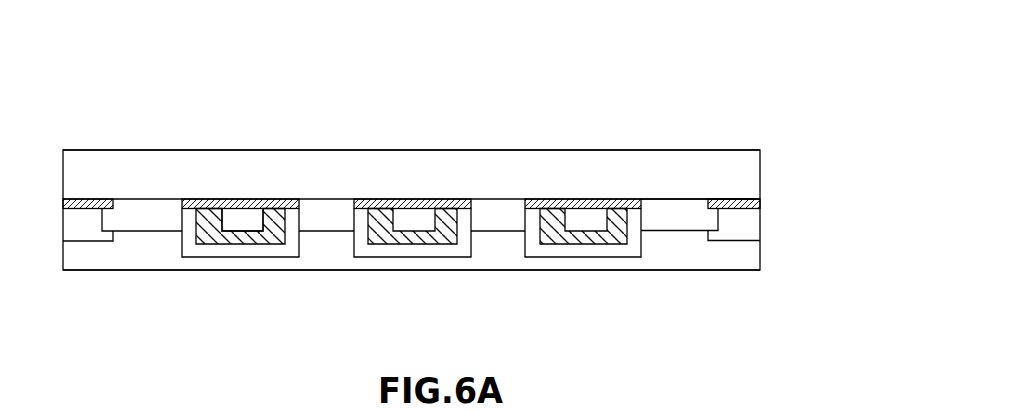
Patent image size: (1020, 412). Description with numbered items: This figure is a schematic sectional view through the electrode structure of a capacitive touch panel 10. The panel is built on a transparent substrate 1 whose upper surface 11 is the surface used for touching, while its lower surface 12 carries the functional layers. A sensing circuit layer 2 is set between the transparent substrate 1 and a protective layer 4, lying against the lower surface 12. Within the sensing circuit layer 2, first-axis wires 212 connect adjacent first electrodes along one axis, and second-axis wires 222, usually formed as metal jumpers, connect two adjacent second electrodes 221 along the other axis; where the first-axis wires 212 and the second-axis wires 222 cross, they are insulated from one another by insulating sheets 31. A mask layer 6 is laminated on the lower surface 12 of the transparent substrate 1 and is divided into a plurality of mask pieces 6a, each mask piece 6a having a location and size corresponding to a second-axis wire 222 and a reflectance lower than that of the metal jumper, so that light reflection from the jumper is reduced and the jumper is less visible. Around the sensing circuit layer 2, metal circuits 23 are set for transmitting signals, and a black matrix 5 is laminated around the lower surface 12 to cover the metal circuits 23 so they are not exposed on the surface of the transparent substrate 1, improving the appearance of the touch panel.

The capacitive touch panel 10 is at (780, 8).
The upper surface 11 is at (142, 62).
The transparent substrate 1 is at (167, 182).
The lower surface 12 is at (695, 198).
The black matrix 5 is at (760, 203).
The mask piece 6a is at (428, 199).
The mask layer 6 is at (628, 93).
The sensing circuit layer 2 is at (377, 88).
The insulating sheet 31 is at (275, 240).
The first-axis wire 212 is at (237, 221).
The second-axis wire 222 is at (213, 252).
The second electrode 221 is at (322, 217).
The metal circuit 23 is at (740, 220).
The protective layer 4 is at (134, 257).